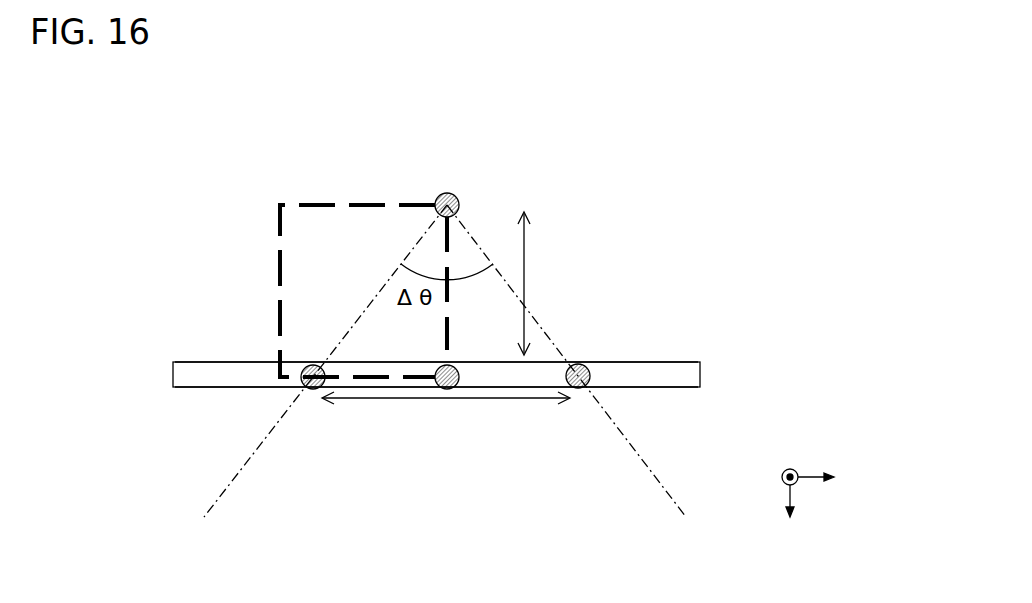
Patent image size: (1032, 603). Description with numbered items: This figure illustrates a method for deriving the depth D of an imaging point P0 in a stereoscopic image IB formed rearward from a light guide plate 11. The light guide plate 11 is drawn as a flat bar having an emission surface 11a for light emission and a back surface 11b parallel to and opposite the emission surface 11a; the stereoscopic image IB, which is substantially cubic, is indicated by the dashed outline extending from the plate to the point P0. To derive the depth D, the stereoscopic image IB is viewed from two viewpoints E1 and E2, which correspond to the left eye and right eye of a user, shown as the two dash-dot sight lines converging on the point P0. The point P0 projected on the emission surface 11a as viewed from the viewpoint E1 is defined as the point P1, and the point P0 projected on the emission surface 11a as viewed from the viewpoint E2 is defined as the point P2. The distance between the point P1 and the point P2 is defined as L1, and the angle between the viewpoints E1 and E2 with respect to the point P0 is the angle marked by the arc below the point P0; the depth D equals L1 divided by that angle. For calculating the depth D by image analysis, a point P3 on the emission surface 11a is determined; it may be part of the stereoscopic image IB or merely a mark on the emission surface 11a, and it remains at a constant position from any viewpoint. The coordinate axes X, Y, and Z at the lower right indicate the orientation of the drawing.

The light guide plate 11 is at (700, 375).
The emission surface 11a is at (668, 387).
The back surface 11b is at (668, 362).
The stereoscopic image IB is at (362, 200).
The imaging point P0 is at (447, 192).
The point P1 is at (313, 390).
The point P2 is at (578, 389).
The point P3 is at (456, 367).
The depth D is at (533, 283).
The distance L1 is at (446, 408).
The viewpoint E1 is at (321, 378).
The viewpoint E2 is at (573, 378).
The X axis X is at (826, 479).
The Y axis Y is at (783, 464).
The Z axis Z is at (790, 518).